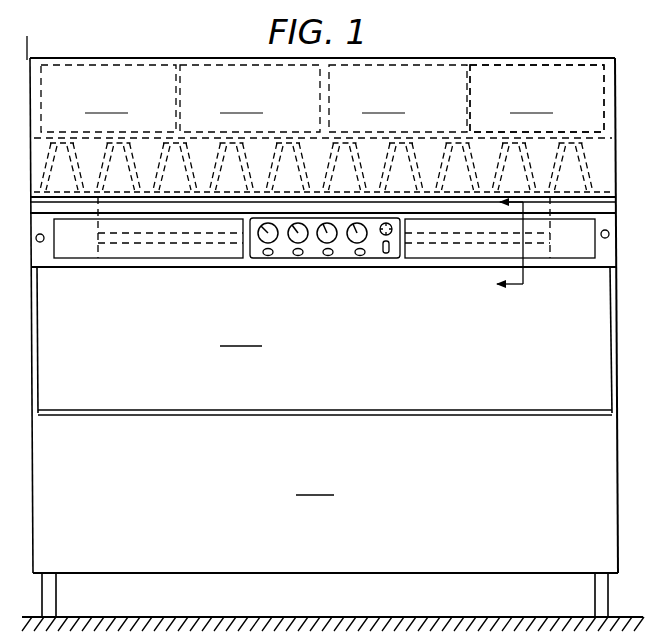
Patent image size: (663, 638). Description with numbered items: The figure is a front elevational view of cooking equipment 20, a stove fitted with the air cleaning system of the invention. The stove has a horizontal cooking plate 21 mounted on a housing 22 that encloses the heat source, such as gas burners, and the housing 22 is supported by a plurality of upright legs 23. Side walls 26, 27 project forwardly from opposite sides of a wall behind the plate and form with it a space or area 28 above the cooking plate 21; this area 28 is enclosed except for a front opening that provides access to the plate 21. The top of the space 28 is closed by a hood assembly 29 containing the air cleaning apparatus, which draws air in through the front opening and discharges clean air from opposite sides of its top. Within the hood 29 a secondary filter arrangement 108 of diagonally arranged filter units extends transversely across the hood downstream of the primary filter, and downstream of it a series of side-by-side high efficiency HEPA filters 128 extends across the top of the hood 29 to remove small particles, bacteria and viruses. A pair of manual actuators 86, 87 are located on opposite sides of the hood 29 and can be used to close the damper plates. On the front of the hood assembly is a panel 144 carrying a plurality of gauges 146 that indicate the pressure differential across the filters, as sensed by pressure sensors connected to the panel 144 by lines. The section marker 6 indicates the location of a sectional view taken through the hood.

The cooking equipment 20 is at (170, 50).
The hood assembly 29 is at (580, 96).
The high efficiency filters 128 is at (323, 101).
The secondary filter arrangement 108 is at (257, 154).
The section line 6- 6 is at (499, 253).
The manual actuator 87 is at (40, 242).
The manual actuator 86 is at (604, 238).
The gauges 146 is at (274, 242).
The panel 144 is at (375, 253).
The side wall 26 is at (38, 345).
The side wall 27 is at (612, 352).
The space or area 28 is at (324, 339).
The horizontal cooking plate 21 is at (360, 409).
The housing 22 is at (325, 494).
The upright legs 23 is at (50, 594).